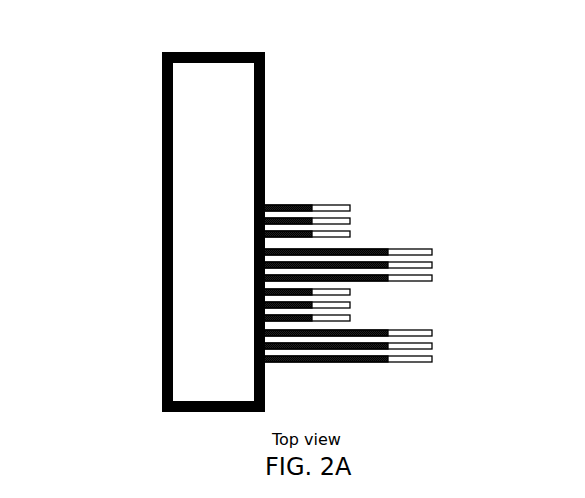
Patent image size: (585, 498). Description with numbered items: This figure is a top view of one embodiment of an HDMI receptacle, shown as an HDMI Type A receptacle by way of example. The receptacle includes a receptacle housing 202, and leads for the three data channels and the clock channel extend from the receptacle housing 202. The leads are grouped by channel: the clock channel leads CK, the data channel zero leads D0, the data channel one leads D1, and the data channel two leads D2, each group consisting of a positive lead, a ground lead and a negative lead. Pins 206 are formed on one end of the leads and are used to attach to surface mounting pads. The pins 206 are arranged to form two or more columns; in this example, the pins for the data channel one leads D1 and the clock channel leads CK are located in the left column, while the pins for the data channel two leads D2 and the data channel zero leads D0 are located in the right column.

The receptacle housing 202 is at (163, 203).
The pins 206 is at (408, 265).
The clock channel leads CK is at (378, 227).
The data channel 0 leads D0 is at (460, 271).
The data channel 1 leads D1 is at (377, 311).
The data channel 2 leads D2 is at (367, 346).